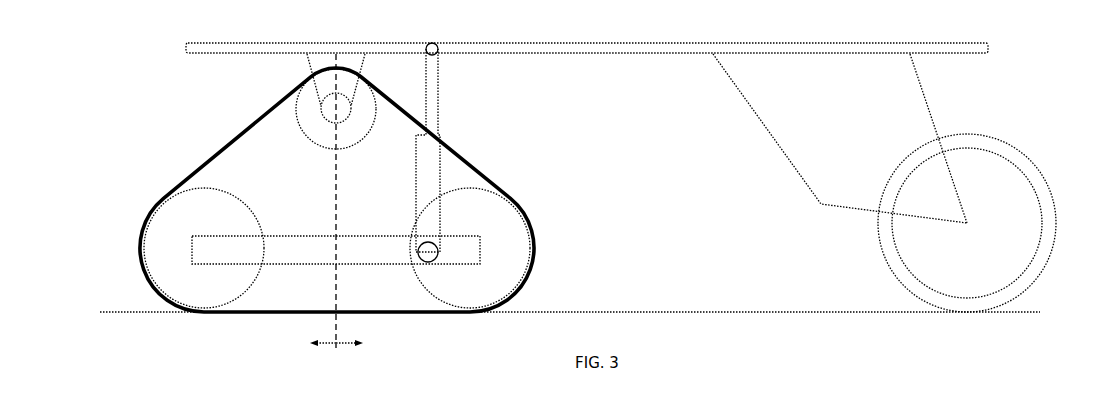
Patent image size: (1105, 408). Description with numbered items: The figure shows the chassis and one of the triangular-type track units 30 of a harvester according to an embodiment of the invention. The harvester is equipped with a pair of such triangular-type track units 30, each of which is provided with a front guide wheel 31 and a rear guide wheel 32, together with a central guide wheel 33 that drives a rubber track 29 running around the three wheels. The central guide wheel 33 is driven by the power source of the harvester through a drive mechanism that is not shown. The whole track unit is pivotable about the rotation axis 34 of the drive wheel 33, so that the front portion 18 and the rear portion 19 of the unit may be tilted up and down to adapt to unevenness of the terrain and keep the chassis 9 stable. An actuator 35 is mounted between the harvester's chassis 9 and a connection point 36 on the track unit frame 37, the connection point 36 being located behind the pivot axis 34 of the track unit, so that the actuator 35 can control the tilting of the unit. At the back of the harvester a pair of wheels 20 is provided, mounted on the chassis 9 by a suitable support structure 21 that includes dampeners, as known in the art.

The chassis 9 is at (626, 46).
The front portion 18 is at (321, 334).
The rear portion 19 is at (351, 334).
The wheels 20 is at (923, 251).
The support structure 21 is at (783, 143).
The rubber track 29 is at (233, 142).
The triangular-type track unit 30 is at (359, 177).
The front guide wheel 31 is at (173, 232).
The rear guide wheel 32 is at (515, 232).
The central guide wheel 33 is at (363, 128).
The rotation axis 34 is at (336, 108).
The actuator 35 is at (435, 178).
The connection point 36 is at (428, 252).
The track unit frame 37 is at (300, 243).